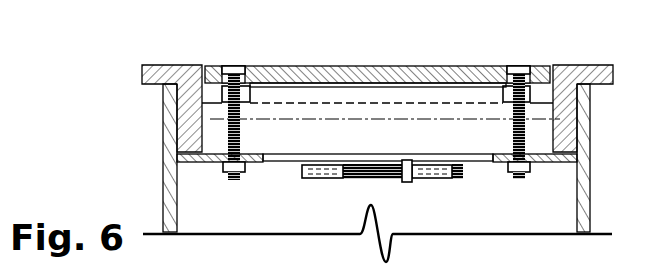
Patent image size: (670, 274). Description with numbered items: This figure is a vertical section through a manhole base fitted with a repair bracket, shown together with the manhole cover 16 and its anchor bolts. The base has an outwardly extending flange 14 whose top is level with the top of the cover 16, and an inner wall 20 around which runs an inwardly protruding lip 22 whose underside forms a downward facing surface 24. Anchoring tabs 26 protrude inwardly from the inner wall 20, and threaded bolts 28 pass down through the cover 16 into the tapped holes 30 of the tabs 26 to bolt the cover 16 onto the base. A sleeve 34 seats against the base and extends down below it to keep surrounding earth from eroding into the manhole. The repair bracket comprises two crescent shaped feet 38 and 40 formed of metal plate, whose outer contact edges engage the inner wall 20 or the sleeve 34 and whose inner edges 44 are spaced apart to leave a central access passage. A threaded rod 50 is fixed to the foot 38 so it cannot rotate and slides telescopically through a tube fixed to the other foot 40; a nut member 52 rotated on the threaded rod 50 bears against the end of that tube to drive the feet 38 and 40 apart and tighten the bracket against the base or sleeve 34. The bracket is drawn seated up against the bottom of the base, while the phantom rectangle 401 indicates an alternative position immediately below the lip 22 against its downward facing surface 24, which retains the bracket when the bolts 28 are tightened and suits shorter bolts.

The flange 14 is at (141, 73).
The cover 16 is at (372, 75).
The inner wall 20 is at (204, 130).
The lip 22 is at (217, 88).
The downward facing surface 24 is at (581, 133).
The anchoring tabs 26 is at (244, 86).
The threaded bolts 28 is at (238, 64).
The tapped holes 30 is at (224, 172).
The sleeve 34 is at (167, 113).
The foot 38 is at (190, 165).
The foot 40 is at (556, 163).
The phantom rectangle 401 is at (295, 118).
The inner edges 44 is at (263, 159).
The threaded rod 50 is at (360, 179).
The nut member 52 is at (409, 183).